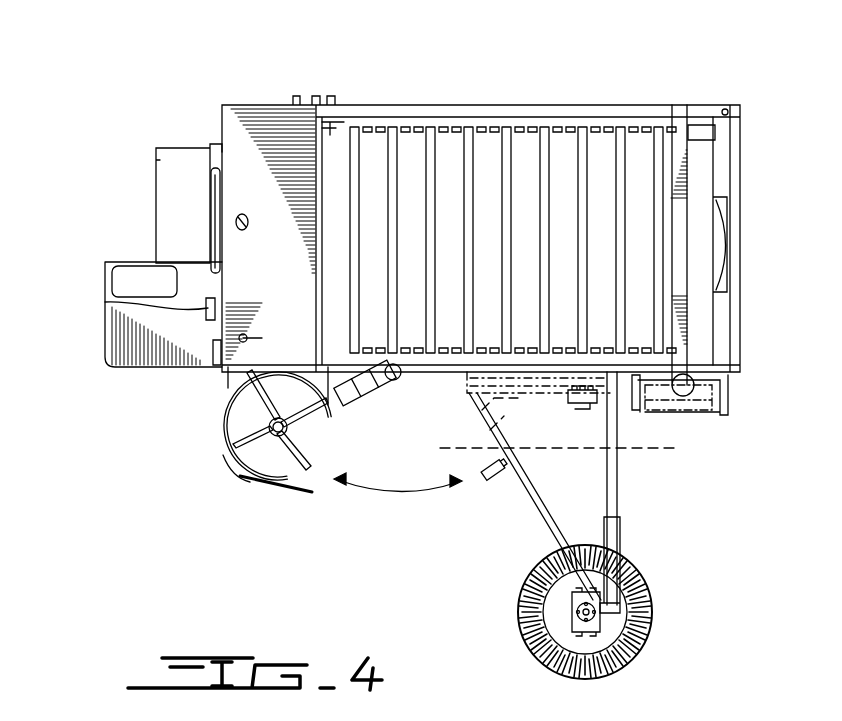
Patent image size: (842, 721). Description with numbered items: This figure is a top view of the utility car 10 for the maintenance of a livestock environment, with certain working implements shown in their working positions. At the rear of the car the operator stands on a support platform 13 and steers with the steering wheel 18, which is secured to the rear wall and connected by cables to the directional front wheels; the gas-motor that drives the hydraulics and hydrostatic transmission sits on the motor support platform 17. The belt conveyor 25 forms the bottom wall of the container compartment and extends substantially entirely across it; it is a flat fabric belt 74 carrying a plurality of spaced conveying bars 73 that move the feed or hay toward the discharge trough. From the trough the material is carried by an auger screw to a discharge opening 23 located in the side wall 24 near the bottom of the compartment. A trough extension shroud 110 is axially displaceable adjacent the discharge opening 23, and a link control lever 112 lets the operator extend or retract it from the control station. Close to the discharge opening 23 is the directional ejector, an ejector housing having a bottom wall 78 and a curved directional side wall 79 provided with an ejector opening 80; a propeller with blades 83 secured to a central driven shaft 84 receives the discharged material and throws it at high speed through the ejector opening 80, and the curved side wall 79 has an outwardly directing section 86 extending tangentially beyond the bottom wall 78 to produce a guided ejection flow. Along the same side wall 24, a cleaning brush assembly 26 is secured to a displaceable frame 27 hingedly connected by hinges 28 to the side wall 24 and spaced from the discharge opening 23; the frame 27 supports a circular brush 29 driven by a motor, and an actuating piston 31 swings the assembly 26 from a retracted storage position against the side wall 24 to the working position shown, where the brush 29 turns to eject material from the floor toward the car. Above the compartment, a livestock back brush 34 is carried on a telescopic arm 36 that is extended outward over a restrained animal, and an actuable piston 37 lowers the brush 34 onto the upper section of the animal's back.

The utility car 10 is at (212, 58).
The support platform 13 is at (122, 344).
The motor support platform 17 is at (176, 170).
The steering wheel 18 is at (214, 226).
The link control lever 112 is at (206, 306).
The trough extension shroud 110 is at (245, 372).
The conveying bars 73 is at (393, 150).
The belt conveyor 25 is at (490, 152).
The flat fabric belt 74 is at (598, 165).
The telescopic arm 36 is at (686, 192).
The actuable piston 37 is at (688, 396).
The livestock back brush 34 is at (706, 414).
The discharge opening 23 is at (246, 378).
The central driven shaft 84 is at (268, 428).
The bottom wall 78 is at (326, 446).
The curved directional side wall 79 is at (330, 420).
The blades 83 is at (232, 466).
The outwardly directing section 86 is at (296, 492).
The ejector opening 80 is at (292, 470).
The side wall 24 is at (430, 376).
The hinges 28 is at (474, 428).
The displaceable frame 27 is at (618, 462).
The actuating piston 31 is at (620, 516).
The cleaning brush assembly 26 is at (570, 612).
The circular brush 29 is at (652, 600).